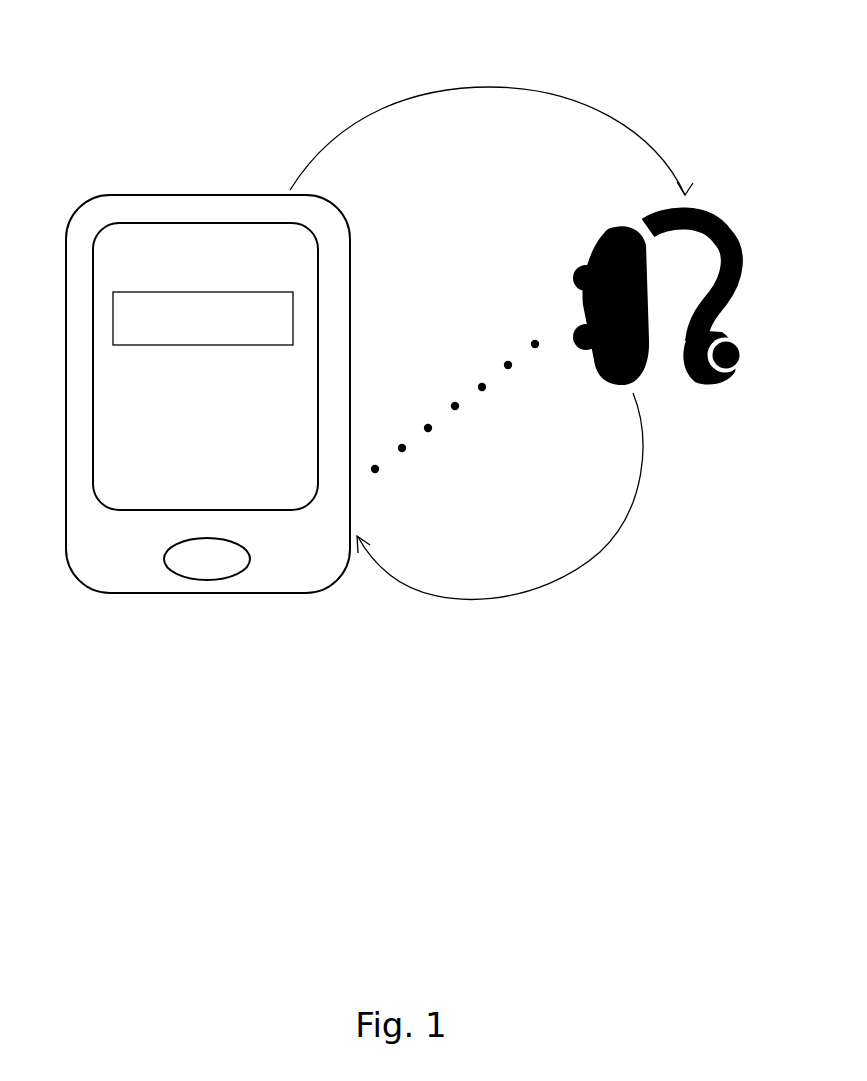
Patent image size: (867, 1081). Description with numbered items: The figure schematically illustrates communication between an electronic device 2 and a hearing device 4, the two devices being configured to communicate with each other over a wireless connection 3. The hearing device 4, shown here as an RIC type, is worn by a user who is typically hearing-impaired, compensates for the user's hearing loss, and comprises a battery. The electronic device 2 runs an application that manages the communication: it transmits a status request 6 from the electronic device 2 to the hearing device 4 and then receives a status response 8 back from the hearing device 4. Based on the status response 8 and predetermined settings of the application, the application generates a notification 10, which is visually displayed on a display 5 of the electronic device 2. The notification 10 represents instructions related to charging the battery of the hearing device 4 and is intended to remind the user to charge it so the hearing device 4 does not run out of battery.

The electronic device 2 is at (270, 583).
The wireless connection 3 is at (465, 398).
The hearing device 4 is at (697, 383).
The display 5 is at (149, 499).
The status request 6 is at (457, 88).
The status response 8 is at (537, 585).
The notification 10 is at (166, 346).